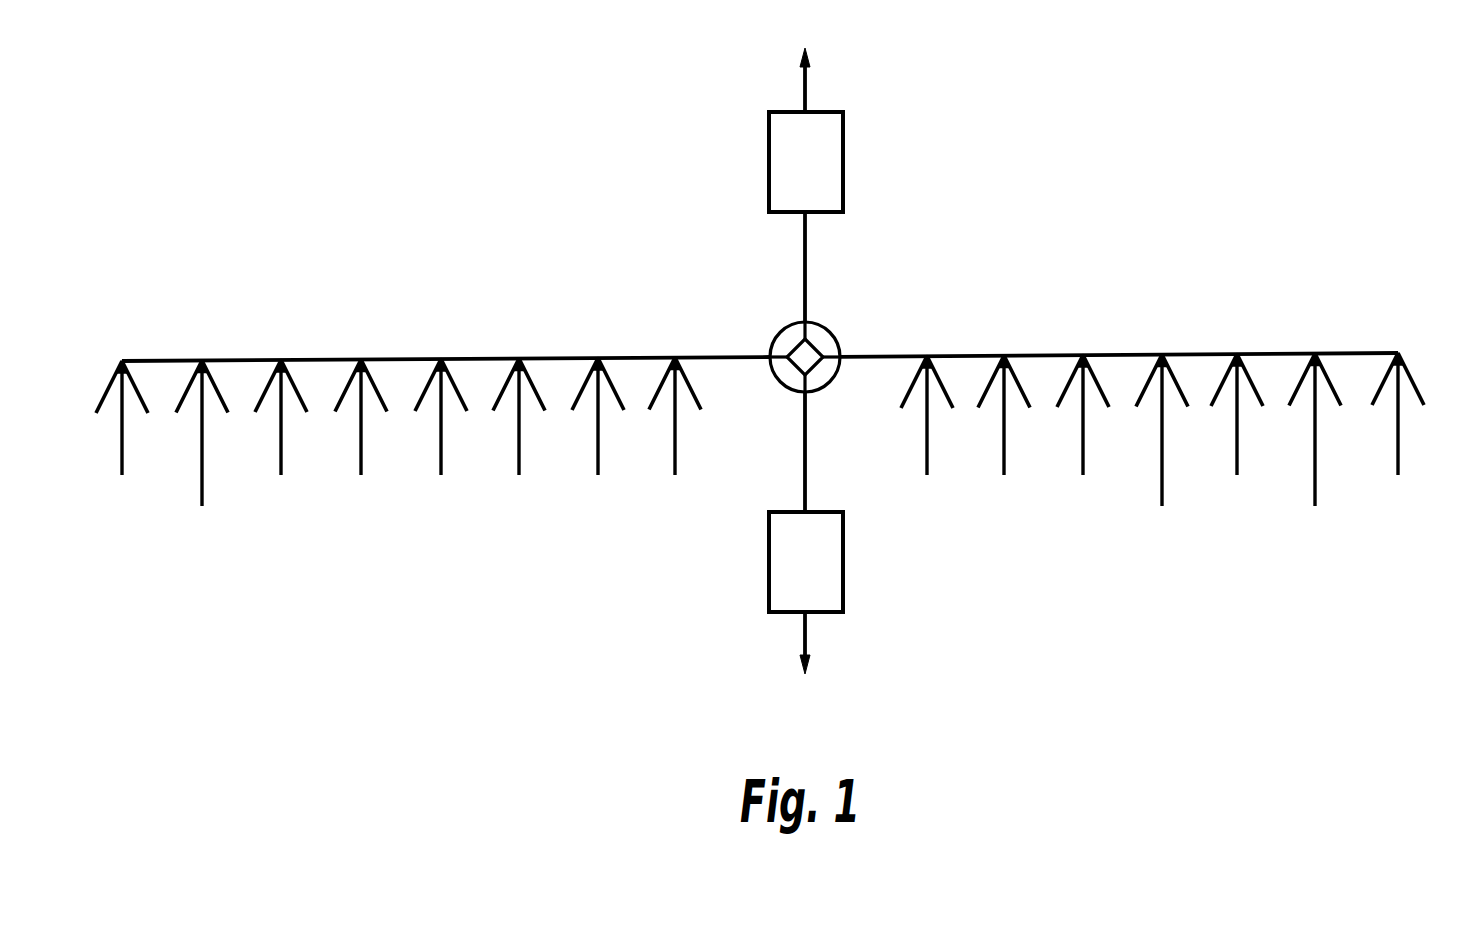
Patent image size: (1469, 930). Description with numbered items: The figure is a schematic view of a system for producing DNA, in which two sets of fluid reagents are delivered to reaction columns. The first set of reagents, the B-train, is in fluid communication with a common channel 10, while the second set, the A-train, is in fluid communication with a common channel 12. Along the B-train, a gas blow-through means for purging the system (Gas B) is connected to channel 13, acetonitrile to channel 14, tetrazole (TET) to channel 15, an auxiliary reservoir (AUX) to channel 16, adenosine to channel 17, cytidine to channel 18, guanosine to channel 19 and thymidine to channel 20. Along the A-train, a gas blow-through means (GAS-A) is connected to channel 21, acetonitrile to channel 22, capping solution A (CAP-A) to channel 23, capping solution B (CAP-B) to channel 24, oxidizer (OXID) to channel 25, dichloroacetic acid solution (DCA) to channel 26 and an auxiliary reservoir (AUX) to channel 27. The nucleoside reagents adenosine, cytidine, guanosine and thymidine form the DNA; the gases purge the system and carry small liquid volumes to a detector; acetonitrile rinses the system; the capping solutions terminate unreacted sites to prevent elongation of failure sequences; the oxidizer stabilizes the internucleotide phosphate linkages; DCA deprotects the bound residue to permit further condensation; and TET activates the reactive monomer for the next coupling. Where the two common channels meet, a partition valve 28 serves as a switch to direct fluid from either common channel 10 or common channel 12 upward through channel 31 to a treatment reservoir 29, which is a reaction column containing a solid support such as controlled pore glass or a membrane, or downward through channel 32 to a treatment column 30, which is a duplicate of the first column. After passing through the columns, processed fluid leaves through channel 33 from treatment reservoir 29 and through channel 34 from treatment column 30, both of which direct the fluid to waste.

The common channel 10 is at (722, 357).
The common channel 12 is at (858, 356).
The channel 13 is at (122, 442).
The channel 14 is at (202, 442).
The channel 15 is at (281, 442).
The channel 16 is at (361, 442).
The channel 17 is at (441, 442).
The channel 18 is at (519, 442).
The channel 19 is at (598, 442).
The channel 20 is at (675, 442).
The channel 21 is at (1398, 442).
The channel 22 is at (1315, 442).
The channel 23 is at (1237, 442).
The channel 24 is at (1162, 442).
The channel 25 is at (1083, 442).
The channel 26 is at (1004, 442).
The channel 27 is at (927, 442).
The partition valve 28 is at (815, 326).
The treatment reservoir 29 is at (769, 163).
The treatment column 30 is at (769, 570).
The channel 31 is at (805, 243).
The channel 32 is at (805, 420).
The channel 33 is at (805, 83).
The channel 34 is at (805, 645).